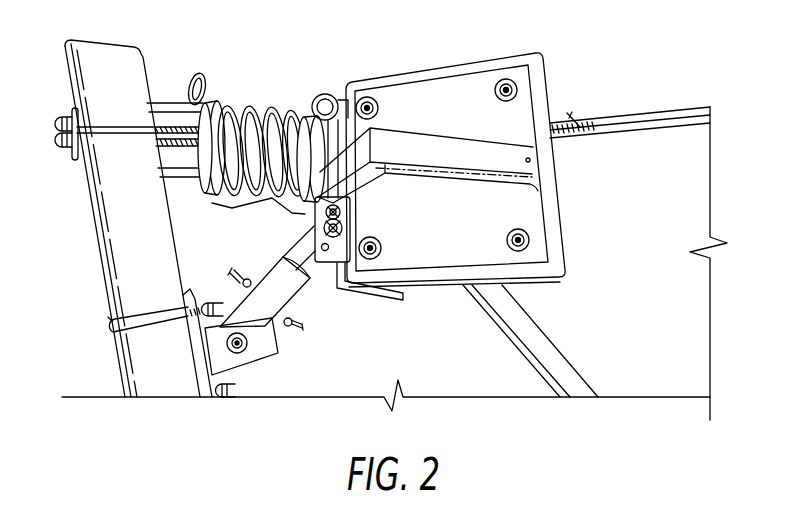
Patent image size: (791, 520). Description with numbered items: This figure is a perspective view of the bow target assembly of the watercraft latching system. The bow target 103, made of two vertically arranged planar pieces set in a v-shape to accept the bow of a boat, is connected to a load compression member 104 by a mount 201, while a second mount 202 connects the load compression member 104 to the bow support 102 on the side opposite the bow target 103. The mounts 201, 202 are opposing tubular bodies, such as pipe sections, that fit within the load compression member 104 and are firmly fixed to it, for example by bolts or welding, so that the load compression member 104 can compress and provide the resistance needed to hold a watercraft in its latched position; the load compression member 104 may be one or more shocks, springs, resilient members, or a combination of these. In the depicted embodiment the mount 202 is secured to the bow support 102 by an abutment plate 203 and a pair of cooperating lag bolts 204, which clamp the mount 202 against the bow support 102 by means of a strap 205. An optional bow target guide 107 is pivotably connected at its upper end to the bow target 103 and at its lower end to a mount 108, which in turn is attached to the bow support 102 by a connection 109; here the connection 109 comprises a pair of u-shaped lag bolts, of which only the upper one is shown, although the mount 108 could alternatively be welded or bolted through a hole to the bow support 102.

The bow support 102 is at (130, 270).
The bow target 103 is at (448, 76).
The load compression member 104 is at (252, 112).
The bow target guide 107 is at (287, 297).
The mount 108 is at (265, 351).
The connection 109 is at (107, 333).
The mount 201 is at (298, 130).
The mount 202 is at (222, 190).
The abutment plate 203 is at (206, 100).
The lag bolts 204 is at (58, 122).
The strap 205 is at (76, 163).